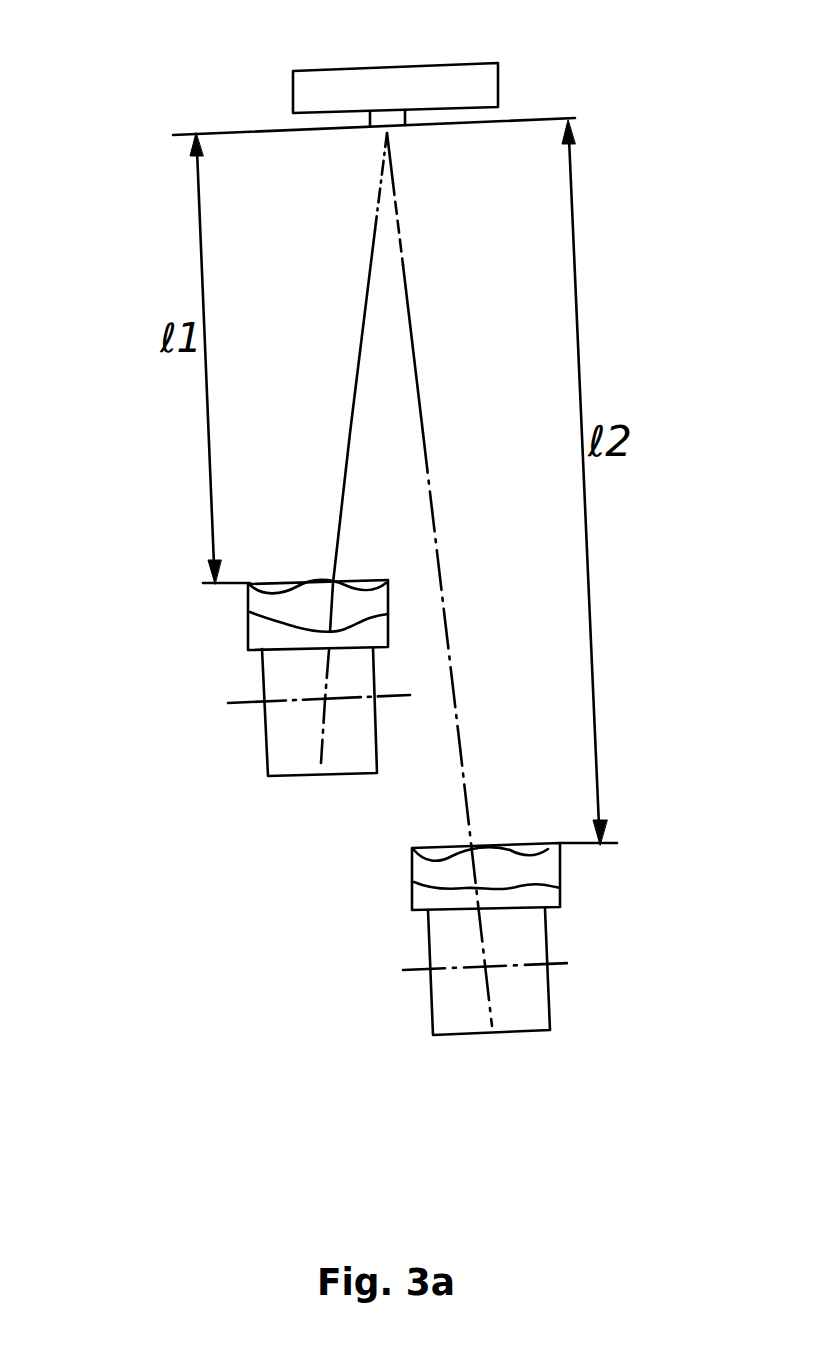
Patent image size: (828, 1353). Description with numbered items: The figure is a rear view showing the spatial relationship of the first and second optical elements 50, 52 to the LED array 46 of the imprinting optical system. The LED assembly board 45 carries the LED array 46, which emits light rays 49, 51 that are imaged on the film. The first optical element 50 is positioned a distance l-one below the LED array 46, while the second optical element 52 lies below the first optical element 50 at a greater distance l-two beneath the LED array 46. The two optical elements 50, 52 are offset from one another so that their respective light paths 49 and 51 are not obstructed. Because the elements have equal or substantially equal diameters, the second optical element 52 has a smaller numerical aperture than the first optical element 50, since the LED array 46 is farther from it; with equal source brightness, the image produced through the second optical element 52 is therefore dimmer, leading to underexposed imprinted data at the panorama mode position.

The LED assembly board 45 is at (340, 88).
The LED array 46 is at (388, 110).
The light ray 49 is at (357, 377).
The light ray 51 is at (418, 377).
The first optical element 50 is at (281, 738).
The second optical element 52 is at (542, 947).